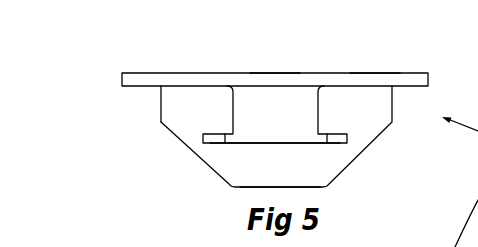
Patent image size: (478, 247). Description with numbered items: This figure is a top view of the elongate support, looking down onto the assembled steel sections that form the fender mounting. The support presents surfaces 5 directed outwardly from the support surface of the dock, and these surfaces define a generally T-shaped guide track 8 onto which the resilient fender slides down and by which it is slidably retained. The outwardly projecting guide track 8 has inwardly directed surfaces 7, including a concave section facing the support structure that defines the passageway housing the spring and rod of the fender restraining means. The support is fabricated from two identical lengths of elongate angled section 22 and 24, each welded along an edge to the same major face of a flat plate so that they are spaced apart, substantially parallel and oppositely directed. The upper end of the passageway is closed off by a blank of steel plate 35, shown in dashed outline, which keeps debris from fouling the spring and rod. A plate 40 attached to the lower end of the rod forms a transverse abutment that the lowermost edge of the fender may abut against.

The surfaces 5 is at (298, 156).
The inwardly directed surfaces 7 is at (138, 71).
The guide track 8 is at (186, 141).
The elongate angled section 22 is at (238, 115).
The elongate angled section 24 is at (373, 73).
The blank of steel plate 35 is at (271, 73).
The plate 40 is at (165, 110).